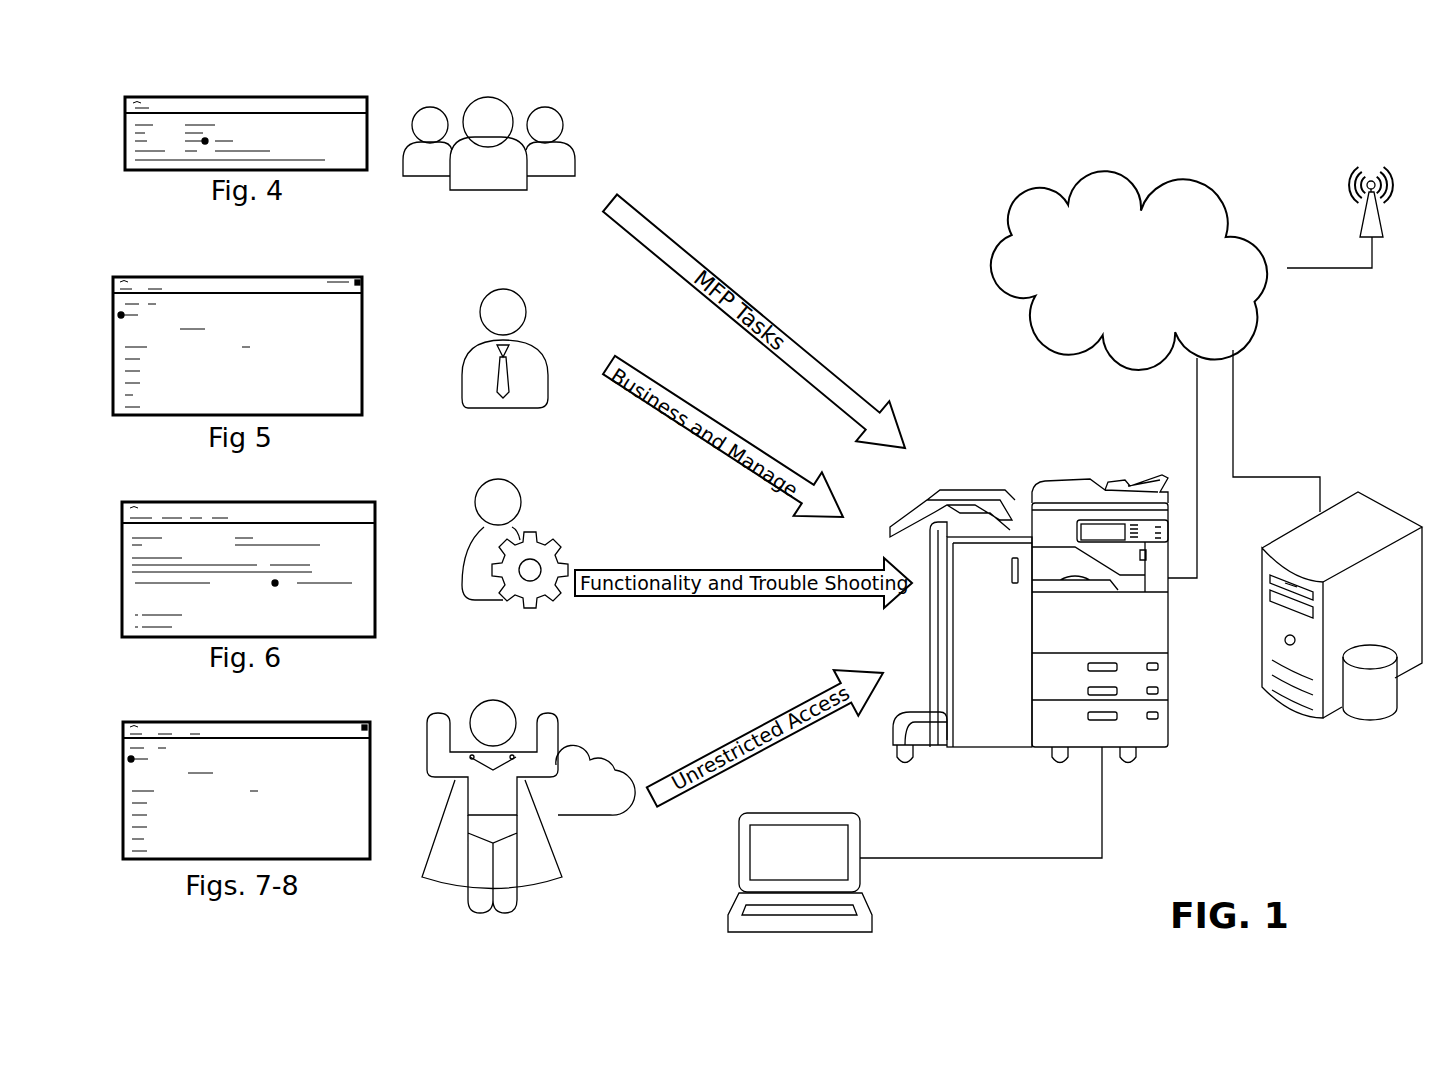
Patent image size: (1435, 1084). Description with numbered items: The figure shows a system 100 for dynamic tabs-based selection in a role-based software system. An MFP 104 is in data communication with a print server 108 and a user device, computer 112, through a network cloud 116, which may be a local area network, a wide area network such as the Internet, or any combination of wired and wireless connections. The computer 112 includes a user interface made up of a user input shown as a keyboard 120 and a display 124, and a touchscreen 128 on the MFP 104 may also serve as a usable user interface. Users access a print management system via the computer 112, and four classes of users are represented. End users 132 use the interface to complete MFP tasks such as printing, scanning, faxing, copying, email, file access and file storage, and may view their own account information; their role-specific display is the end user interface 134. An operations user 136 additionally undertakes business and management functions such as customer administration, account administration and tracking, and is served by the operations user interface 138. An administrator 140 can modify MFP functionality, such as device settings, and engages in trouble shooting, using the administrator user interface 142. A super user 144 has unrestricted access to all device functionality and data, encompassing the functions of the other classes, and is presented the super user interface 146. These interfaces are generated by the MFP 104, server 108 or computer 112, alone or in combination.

The system 100 is at (1295, 142).
The MFP 104 is at (1041, 627).
The server 108 is at (1383, 494).
The computer 112 is at (839, 885).
The network cloud 116 is at (1133, 178).
The keyboard 120 is at (817, 922).
The display 124 is at (848, 868).
The touchscreen 128 is at (1097, 530).
The end users 132 is at (575, 155).
The end user interface 134 is at (311, 97).
The operations user 136 is at (545, 352).
The operations user interface 138 is at (311, 277).
The administrator 140 is at (563, 557).
The administrator user interface 142 is at (311, 502).
The super user 144 is at (597, 748).
The super user interface 146 is at (311, 722).